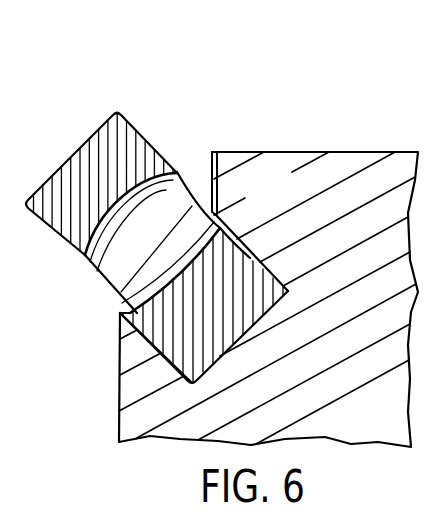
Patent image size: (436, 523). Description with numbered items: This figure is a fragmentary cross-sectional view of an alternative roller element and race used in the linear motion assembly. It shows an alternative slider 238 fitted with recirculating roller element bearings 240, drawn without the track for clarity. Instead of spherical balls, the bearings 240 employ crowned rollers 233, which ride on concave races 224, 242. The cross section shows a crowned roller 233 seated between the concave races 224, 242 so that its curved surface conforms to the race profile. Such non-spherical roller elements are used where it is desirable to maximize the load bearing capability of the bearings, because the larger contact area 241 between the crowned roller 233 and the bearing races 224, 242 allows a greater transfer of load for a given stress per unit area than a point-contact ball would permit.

The recirculating roller element bearing 240 is at (171, 98).
The contact area 241 is at (121, 188).
The crowned roller 233 is at (189, 206).
The slider 238 is at (343, 152).
The concave race 242 is at (264, 256).
The concave race 224 is at (60, 242).